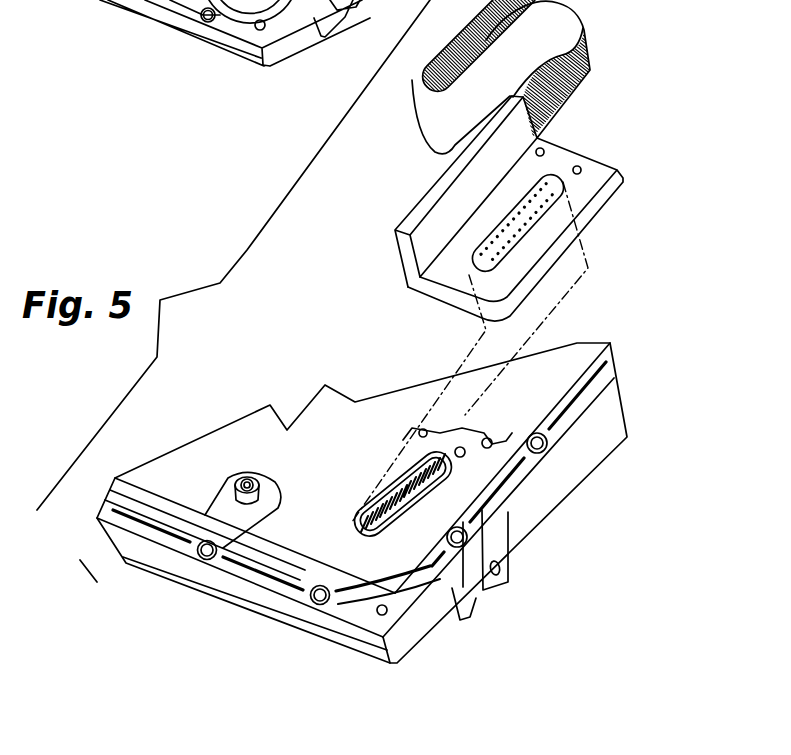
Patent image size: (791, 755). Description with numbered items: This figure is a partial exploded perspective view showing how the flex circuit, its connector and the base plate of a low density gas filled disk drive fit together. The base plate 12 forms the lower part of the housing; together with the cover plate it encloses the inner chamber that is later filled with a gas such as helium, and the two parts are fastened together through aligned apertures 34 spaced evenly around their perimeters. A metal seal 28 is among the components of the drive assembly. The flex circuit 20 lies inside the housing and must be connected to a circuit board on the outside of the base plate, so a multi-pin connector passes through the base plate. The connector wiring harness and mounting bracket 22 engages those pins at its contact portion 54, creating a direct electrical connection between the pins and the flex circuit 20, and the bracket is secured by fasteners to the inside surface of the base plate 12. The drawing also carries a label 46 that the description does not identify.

The base plate 12 is at (374, 473).
The flex circuit 20 is at (437, 123).
The connector wiring harness and mounting bracket 22 is at (483, 309).
The metal seal 28 is at (598, 348).
The aligned apertures 34 is at (84, 0).
The connector receptacle 46 is at (373, 520).
The contact portion 54 is at (547, 180).